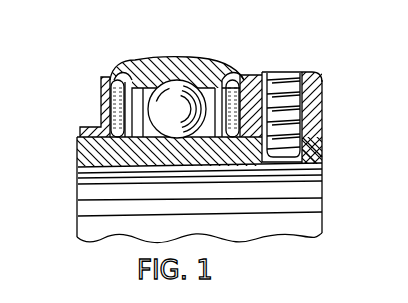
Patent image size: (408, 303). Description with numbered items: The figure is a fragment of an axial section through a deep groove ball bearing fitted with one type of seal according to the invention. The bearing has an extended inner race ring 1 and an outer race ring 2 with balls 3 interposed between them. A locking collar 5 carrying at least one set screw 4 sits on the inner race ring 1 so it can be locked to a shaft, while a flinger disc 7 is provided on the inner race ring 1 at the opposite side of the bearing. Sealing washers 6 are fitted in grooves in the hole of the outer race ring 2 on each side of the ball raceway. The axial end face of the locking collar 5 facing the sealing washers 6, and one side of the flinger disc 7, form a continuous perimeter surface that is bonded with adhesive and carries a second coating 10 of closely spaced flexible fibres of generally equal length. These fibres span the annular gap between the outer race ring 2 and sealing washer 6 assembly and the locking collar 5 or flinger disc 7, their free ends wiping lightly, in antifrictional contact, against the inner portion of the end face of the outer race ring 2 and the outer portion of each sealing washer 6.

The inner race ring 1 is at (88, 166).
The outer race ring 2 is at (204, 57).
The balls 3 is at (159, 88).
The set screw 4 is at (291, 72).
The locking collar 5 is at (321, 75).
The sealing washers 6 is at (118, 68).
The flinger disc 7 is at (102, 118).
The second coating 10 is at (111, 103).